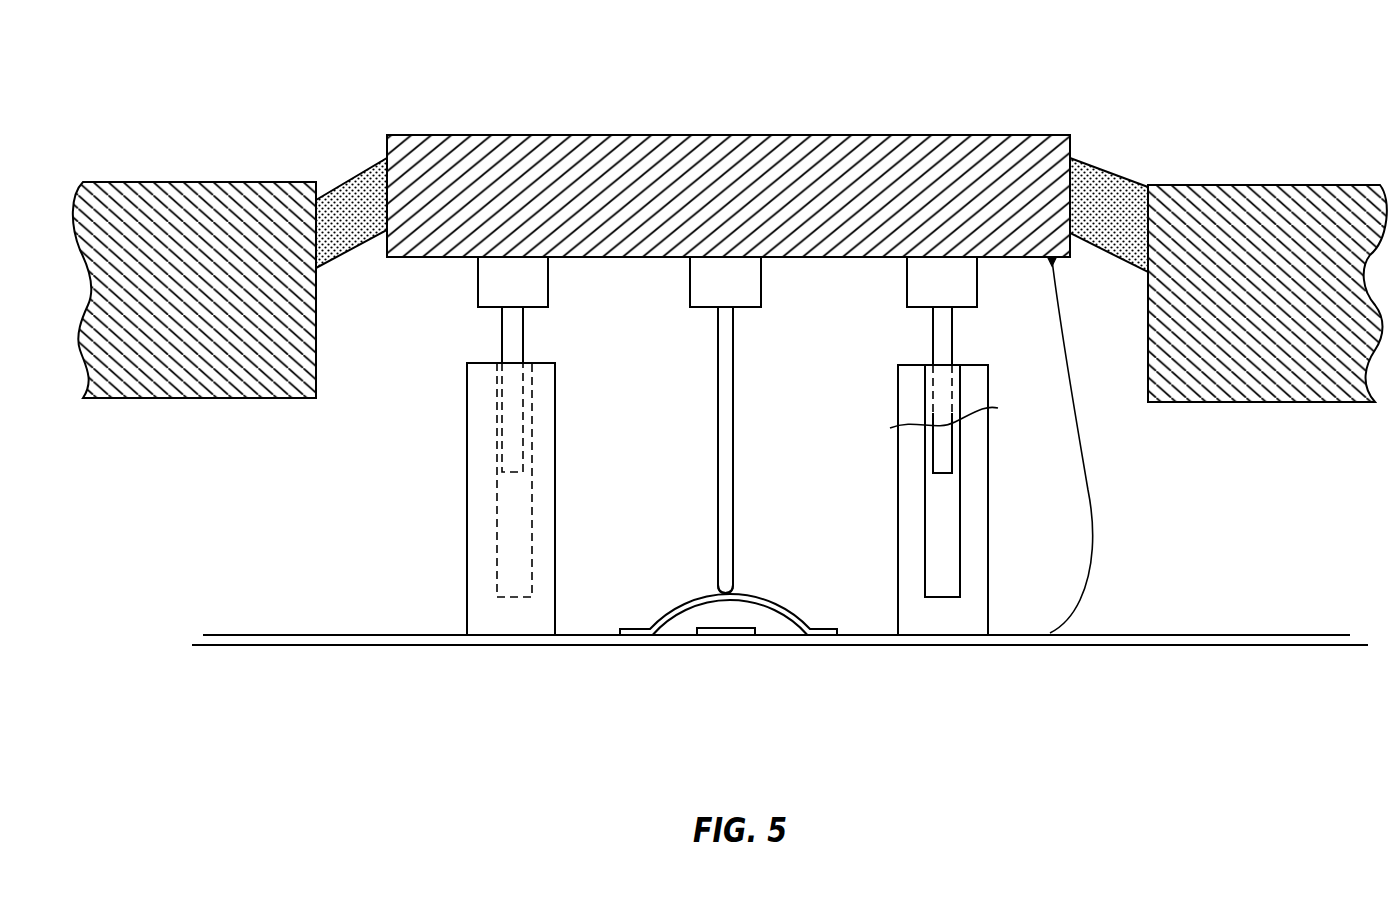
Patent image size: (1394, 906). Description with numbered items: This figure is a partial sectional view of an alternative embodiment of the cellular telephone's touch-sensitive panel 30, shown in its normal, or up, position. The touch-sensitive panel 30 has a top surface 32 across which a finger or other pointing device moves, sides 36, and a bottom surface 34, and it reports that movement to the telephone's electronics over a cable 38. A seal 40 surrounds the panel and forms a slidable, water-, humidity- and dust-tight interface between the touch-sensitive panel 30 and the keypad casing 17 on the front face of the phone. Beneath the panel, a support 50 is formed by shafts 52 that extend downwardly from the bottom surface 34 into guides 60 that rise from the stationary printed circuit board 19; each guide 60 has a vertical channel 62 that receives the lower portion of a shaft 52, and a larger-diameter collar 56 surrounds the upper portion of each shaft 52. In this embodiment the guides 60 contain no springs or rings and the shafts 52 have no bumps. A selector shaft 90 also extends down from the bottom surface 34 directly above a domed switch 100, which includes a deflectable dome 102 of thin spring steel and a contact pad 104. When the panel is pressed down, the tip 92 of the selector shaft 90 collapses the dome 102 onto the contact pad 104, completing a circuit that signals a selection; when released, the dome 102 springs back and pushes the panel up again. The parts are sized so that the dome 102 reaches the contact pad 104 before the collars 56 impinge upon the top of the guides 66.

The keypad casing 17 is at (190, 208).
The printed circuit board 19 is at (1236, 634).
The touch-sensitive panel 30 is at (743, 170).
The top surface 32 is at (920, 134).
The bottom surface 34 is at (422, 258).
The sides 36 is at (1072, 152).
The cable 38 is at (1090, 507).
The seal 40 is at (348, 193).
The support 50 is at (487, 471).
The shaft 52 is at (933, 332).
The collar 56 is at (548, 292).
The guide 60 is at (555, 415).
The channel 62 is at (925, 576).
The top of the guide 66 is at (988, 365).
The selector shaft 90 is at (718, 343).
The tip 92 is at (730, 593).
The domed switch 100 is at (724, 639).
The dome 102 is at (688, 597).
The contact pad 104 is at (718, 635).